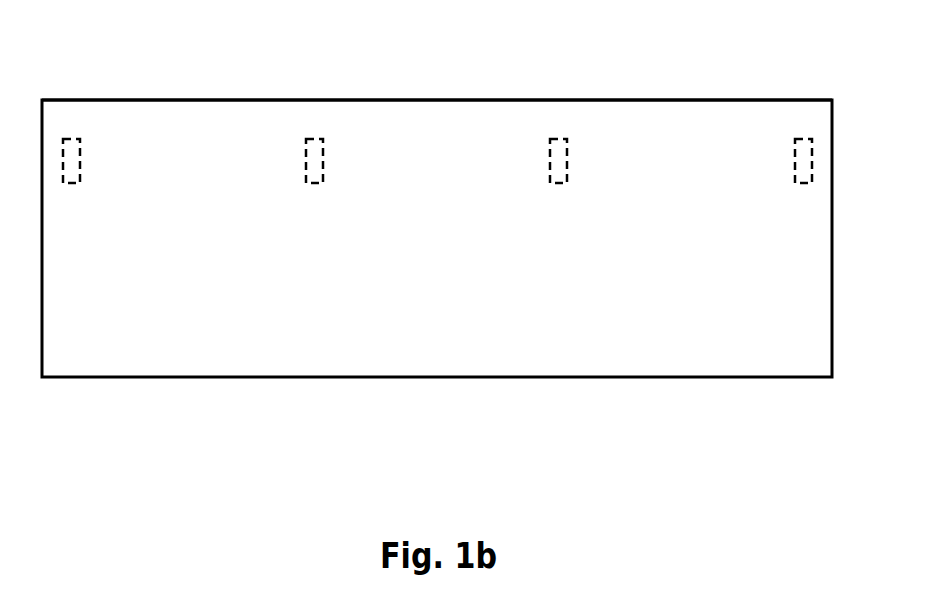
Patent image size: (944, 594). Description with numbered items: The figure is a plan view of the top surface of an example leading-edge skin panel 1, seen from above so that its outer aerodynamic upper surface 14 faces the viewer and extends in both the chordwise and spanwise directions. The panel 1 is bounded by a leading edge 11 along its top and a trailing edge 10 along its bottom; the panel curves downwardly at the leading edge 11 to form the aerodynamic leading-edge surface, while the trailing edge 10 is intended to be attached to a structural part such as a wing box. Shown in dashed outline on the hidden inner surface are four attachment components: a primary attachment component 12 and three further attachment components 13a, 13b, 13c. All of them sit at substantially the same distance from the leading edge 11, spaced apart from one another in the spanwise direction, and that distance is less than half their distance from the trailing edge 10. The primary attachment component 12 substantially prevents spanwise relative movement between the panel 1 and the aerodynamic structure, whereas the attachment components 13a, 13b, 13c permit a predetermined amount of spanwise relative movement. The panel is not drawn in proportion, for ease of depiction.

The LE skin panel 1 is at (262, 312).
The trailing edge 10 is at (638, 377).
The leading edge 11 is at (240, 100).
The primary attachment component 12 is at (559, 143).
The attachment component 13a is at (70, 145).
The attachment component 13b is at (314, 145).
The attachment component 13c is at (803, 145).
The outer aerodynamic upper surface 14 is at (438, 239).